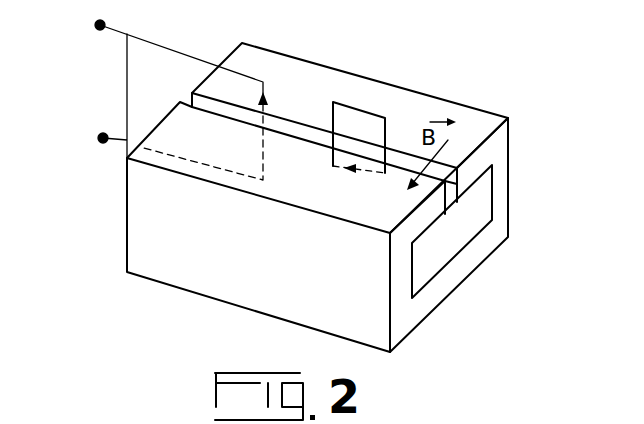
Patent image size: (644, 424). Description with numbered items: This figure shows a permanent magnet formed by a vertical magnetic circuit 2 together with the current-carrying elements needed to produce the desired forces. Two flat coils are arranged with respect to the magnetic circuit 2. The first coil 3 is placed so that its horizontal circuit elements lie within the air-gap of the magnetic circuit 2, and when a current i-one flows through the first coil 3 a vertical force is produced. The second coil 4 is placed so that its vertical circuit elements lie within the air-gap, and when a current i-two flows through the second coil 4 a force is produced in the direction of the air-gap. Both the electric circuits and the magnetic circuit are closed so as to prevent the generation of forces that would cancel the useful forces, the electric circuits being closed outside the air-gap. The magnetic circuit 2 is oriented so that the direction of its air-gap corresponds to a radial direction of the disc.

The vertical magnetic circuit 2 is at (228, 290).
The first coil 3 is at (388, 132).
The second coil 4 is at (240, 71).